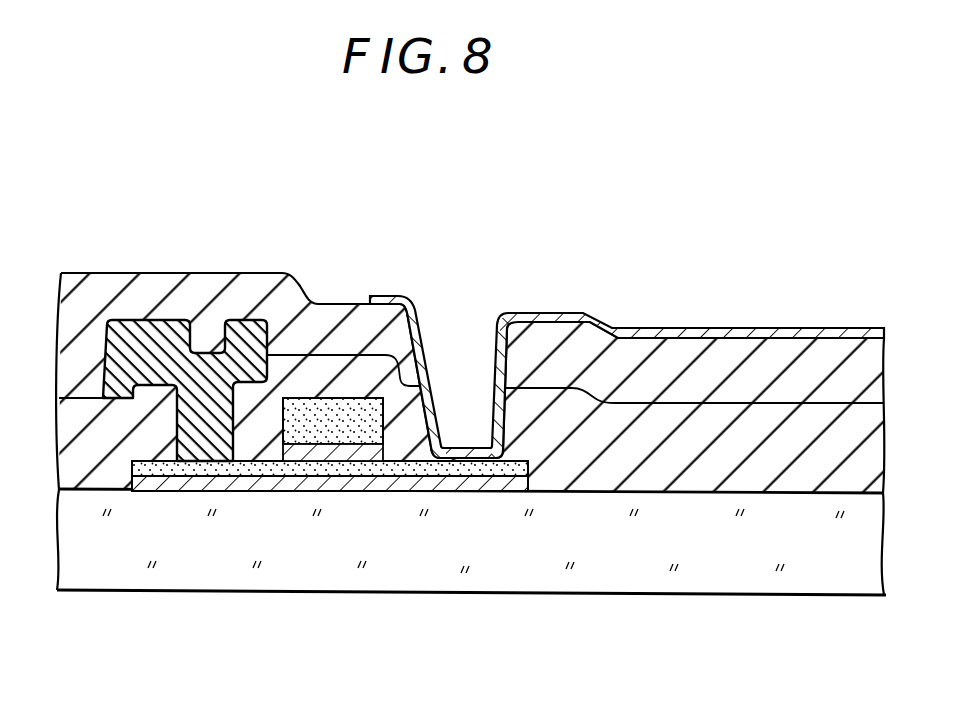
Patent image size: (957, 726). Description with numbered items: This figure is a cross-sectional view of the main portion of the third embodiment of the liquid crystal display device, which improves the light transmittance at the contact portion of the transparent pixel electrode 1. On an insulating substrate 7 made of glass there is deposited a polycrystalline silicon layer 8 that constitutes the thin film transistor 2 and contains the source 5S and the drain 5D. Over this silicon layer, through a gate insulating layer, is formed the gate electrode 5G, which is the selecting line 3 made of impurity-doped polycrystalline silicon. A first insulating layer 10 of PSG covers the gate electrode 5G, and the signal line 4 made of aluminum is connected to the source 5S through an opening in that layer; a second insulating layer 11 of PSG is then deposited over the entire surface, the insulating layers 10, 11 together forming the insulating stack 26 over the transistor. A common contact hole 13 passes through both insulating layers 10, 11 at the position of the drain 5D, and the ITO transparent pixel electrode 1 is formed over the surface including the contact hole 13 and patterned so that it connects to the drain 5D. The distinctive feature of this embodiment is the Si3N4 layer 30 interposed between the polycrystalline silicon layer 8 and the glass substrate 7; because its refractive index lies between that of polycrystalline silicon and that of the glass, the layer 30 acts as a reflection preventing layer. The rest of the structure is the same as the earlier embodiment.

The transparent pixel electrode 1 is at (785, 333).
The thin film transistor 2 is at (330, 543).
The selecting line 3 is at (340, 430).
The signal line 4 is at (148, 320).
The source 5S is at (183, 469).
The drain 5D is at (449, 468).
The gate electrode 5G is at (334, 527).
The insulating substrate 7 is at (626, 585).
The polycrystalline silicon layer 8 is at (293, 471).
The first insulating layer 10 is at (753, 483).
The second insulating layer 11 is at (807, 397).
The contact hole 13 is at (484, 401).
The insulating layers 26 is at (450, 475).
The Si3N4 layer 30 is at (461, 483).